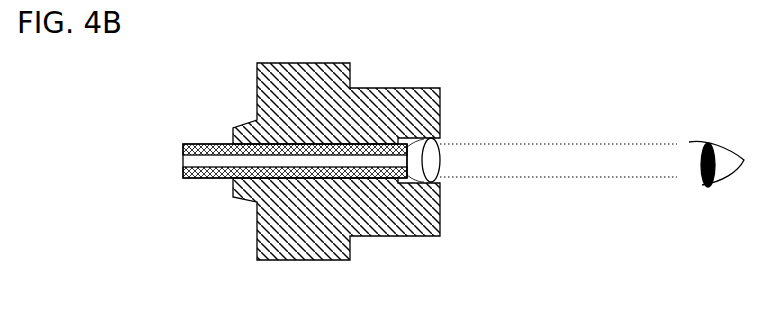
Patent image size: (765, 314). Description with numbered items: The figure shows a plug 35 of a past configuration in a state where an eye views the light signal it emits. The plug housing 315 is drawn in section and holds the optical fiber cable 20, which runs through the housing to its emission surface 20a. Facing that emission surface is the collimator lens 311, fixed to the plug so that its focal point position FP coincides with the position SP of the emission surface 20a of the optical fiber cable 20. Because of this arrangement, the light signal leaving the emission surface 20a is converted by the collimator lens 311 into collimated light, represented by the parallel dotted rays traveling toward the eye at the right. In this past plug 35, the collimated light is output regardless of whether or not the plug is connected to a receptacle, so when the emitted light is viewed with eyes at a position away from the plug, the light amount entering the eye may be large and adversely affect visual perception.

The plug 35 is at (203, 269).
The plug housing 315 is at (298, 157).
The optical fiber cable 20 is at (284, 137).
The emission surface 20a is at (411, 156).
The collimator lens 311 is at (478, 176).
The focal point position FP is at (405, 240).
The position of the emission surface SP is at (405, 291).